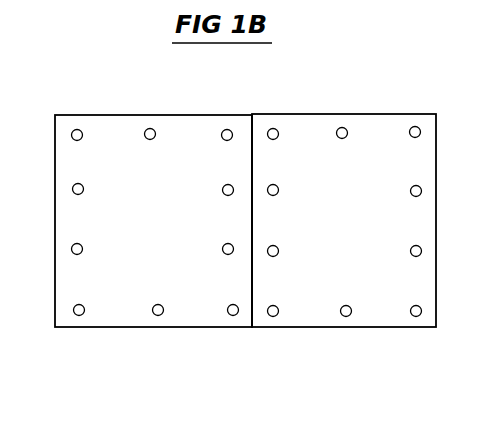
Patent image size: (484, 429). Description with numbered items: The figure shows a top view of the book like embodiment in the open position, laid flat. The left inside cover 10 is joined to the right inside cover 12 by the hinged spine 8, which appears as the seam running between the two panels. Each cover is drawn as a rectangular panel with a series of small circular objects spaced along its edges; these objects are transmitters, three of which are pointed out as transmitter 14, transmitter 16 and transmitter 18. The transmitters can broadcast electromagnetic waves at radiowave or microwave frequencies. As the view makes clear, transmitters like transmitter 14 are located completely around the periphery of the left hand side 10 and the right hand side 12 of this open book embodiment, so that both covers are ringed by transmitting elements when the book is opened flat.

The hinged spine 8 is at (252, 270).
The left inside cover 10 is at (153, 221).
The right inside cover 12 is at (344, 220).
The transmitter 14 is at (152, 311).
The transmitter 16 is at (231, 316).
The transmitter 18 is at (225, 254).